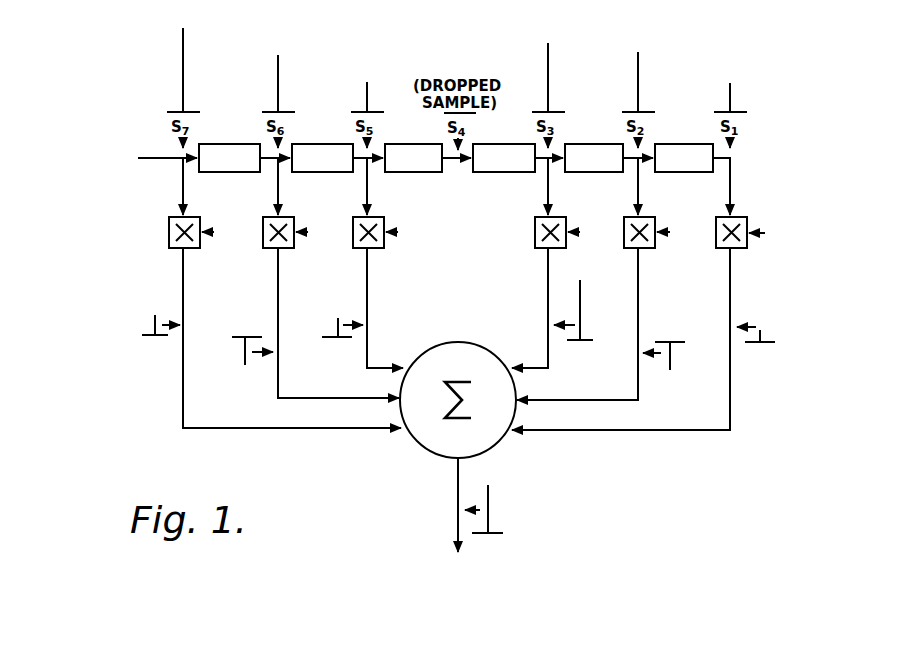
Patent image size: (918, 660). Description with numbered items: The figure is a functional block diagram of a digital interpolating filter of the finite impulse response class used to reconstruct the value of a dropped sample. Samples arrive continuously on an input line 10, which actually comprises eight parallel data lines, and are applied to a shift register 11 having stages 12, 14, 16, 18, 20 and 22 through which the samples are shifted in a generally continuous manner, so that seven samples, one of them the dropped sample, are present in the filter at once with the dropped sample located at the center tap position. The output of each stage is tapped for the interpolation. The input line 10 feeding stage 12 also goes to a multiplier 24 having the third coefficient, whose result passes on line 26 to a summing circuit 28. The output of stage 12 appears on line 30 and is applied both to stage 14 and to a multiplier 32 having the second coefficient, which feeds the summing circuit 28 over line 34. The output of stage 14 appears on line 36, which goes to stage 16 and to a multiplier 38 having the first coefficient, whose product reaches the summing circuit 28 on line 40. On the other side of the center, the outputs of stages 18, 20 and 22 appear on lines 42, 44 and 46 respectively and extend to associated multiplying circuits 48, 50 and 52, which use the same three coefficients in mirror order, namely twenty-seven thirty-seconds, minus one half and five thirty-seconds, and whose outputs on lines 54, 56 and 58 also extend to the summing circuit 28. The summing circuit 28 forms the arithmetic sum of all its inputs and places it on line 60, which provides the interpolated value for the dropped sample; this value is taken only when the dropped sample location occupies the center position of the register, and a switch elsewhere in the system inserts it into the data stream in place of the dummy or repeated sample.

The input line 10 is at (155, 156).
The shift register 11 is at (752, 143).
The stage 12 is at (232, 143).
The stage 14 is at (323, 143).
The stage 16 is at (417, 143).
The stage 18 is at (508, 143).
The stage 20 is at (596, 143).
The stage 22 is at (688, 143).
The multiplier 24 is at (172, 250).
The line 26 is at (306, 430).
The summing circuit 28 is at (432, 457).
The line 30 is at (270, 164).
The multiplier 32 is at (284, 250).
The line 34 is at (275, 391).
The line 36 is at (369, 193).
The multiplier 38 is at (374, 250).
The line 40 is at (369, 334).
The line 42 is at (546, 193).
The line 44 is at (636, 193).
The line 46 is at (728, 193).
The multiplying circuit 48 is at (537, 250).
The multiplying circuit 50 is at (633, 250).
The multiplying circuit 52 is at (722, 251).
The line 54 is at (546, 320).
The line 56 is at (636, 320).
The line 58 is at (732, 295).
The line 60 is at (463, 552).